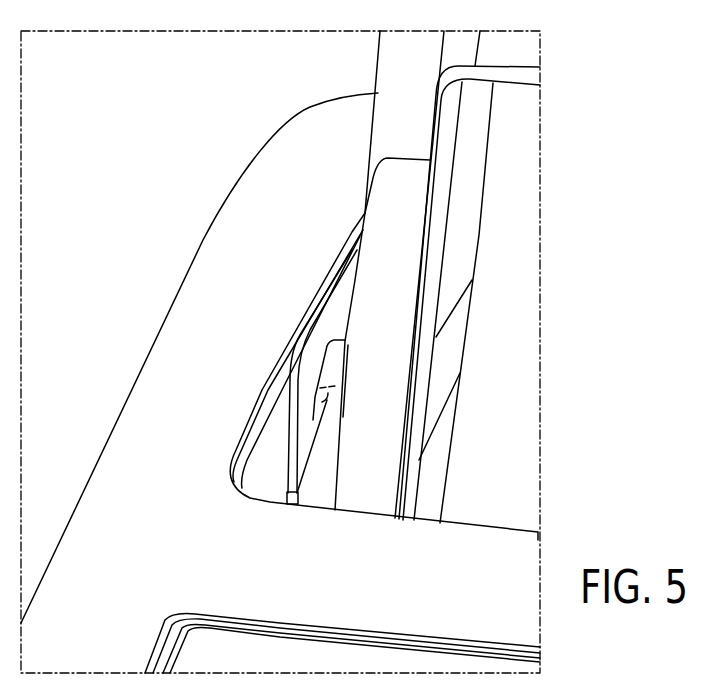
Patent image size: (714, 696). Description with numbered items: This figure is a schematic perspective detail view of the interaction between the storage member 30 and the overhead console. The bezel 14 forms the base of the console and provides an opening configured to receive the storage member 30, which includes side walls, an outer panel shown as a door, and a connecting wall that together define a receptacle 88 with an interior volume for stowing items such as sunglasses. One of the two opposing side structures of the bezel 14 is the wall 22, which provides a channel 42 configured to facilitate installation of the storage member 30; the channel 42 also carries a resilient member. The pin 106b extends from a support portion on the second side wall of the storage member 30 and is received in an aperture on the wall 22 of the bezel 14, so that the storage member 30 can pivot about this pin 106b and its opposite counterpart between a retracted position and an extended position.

The storage member 30 is at (377, 76).
The receptacle 88 is at (517, 175).
The wall 22 is at (198, 222).
The bezel 14 is at (182, 274).
The channel 42 is at (308, 378).
The pin 106b is at (325, 402).